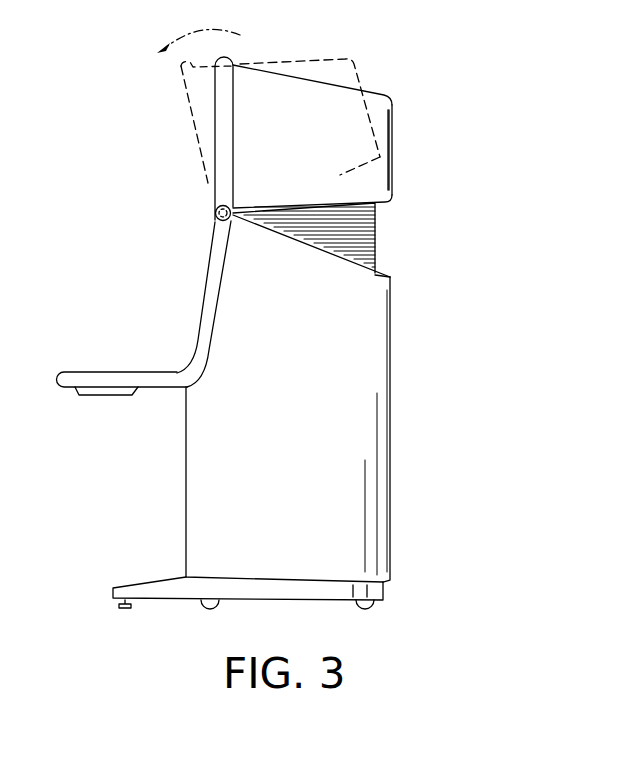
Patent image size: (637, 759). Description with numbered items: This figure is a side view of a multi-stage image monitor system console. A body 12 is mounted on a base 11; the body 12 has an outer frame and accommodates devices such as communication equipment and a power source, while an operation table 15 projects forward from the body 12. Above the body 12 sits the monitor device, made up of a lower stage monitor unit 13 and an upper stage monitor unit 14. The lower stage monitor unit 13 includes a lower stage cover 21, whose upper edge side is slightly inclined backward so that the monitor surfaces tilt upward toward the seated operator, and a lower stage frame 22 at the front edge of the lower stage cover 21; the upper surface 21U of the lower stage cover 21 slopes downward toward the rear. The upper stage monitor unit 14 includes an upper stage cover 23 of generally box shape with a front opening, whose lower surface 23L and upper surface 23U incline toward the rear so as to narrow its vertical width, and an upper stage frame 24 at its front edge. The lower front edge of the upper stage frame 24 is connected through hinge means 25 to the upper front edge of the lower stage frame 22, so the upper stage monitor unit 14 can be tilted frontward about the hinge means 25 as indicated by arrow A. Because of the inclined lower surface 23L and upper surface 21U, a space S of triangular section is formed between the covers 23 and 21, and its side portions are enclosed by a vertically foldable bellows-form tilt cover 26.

The arrow indicating frontward tilting A is at (198, 33).
The base 11 is at (377, 590).
The body 12 is at (172, 472).
The lower stage monitor unit 13 is at (186, 293).
The upper stage monitor unit 14 is at (190, 166).
The operation table 15 is at (118, 372).
The lower stage cover 21 is at (375, 350).
The upper surface of lower stage cover 21U is at (383, 270).
The lower stage frame 22 is at (210, 262).
The upper stage cover 23 is at (396, 140).
The upper surface of upper stage cover 23U is at (384, 94).
The lower surface of upper stage cover 23L is at (388, 206).
The upper stage frame 24 is at (222, 111).
The hinge means 25 is at (214, 228).
The tilt cover 26 is at (380, 243).
The space S is at (388, 223).